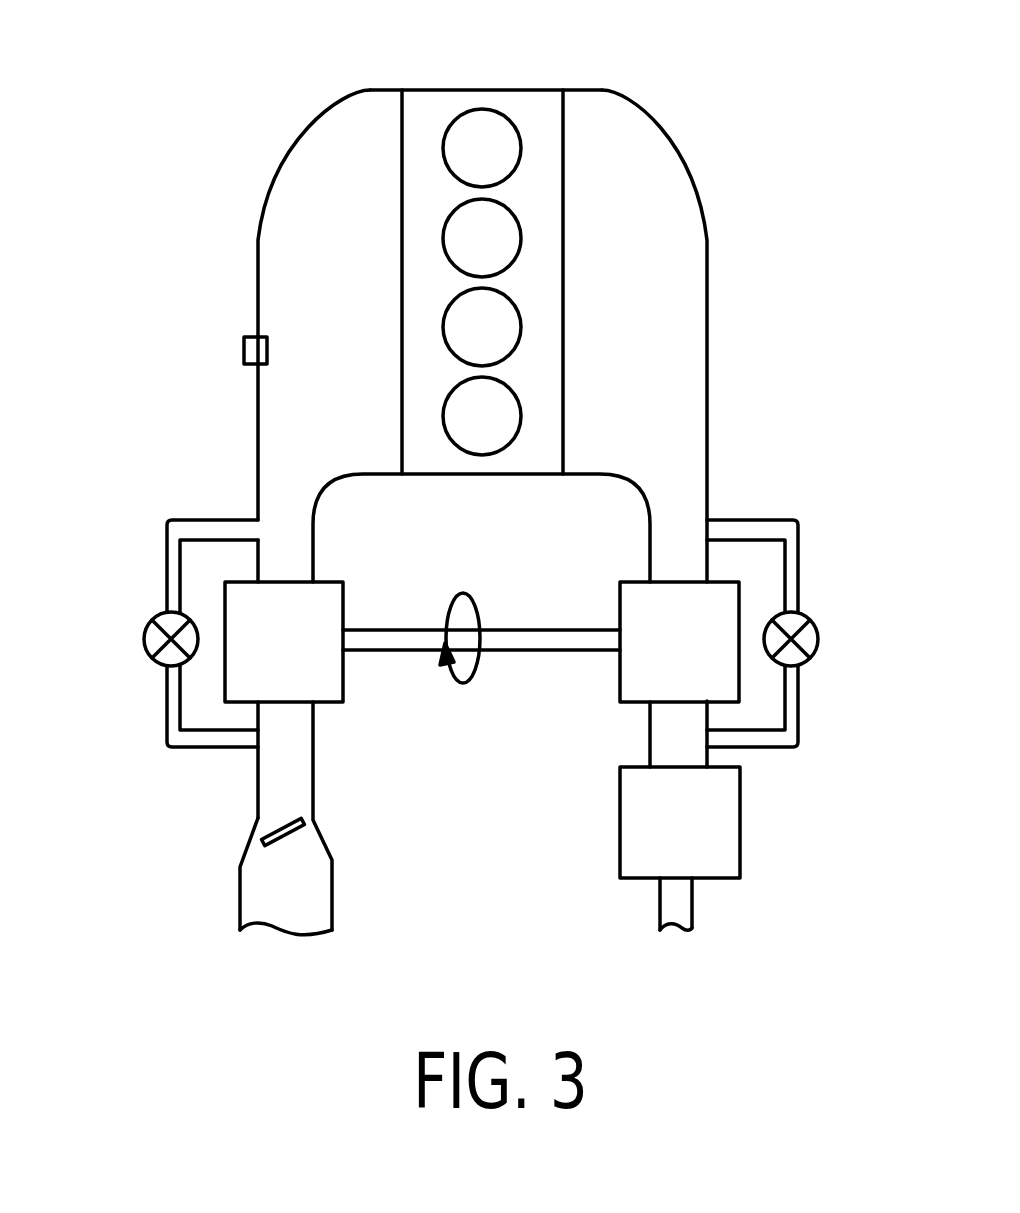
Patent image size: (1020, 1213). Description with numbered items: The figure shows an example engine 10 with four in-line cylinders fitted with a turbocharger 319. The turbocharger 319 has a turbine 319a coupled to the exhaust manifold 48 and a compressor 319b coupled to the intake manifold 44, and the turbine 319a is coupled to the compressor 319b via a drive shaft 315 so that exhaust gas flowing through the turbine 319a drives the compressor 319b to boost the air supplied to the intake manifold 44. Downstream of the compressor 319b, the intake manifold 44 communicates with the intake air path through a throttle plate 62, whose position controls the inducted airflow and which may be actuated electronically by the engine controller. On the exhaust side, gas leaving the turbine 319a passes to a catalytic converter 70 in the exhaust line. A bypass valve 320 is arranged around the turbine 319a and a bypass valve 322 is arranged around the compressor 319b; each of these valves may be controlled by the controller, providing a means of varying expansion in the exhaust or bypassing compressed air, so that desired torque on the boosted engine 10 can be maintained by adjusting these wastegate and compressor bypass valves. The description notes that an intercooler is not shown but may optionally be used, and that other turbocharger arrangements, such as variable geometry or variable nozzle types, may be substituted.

The engine 10 is at (492, 88).
The intake manifold 44 is at (343, 308).
The exhaust manifold 48 is at (648, 309).
The throttle plate 62 is at (278, 830).
The catalytic converter 70 is at (697, 839).
The drive shaft 315 is at (527, 630).
The turbocharger 319 is at (488, 716).
The turbine 319a is at (711, 659).
The compressor 319b is at (316, 659).
The bypass valve 320 is at (819, 642).
The bypass valve 322 is at (143, 640).